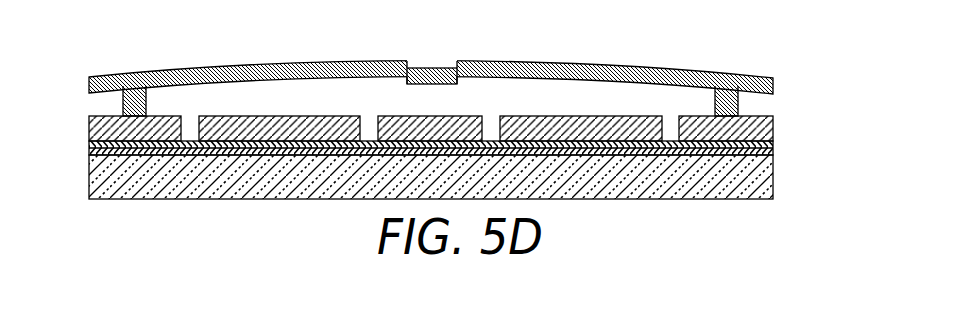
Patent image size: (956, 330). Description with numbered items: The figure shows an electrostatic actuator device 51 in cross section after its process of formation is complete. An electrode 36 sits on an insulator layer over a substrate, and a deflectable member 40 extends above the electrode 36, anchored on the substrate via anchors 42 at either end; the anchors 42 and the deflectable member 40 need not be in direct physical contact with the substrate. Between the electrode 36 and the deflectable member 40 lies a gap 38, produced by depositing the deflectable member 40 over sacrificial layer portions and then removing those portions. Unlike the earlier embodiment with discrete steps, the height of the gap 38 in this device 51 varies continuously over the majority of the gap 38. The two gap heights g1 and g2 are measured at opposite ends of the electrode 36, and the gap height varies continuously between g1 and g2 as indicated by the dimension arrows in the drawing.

The electrode 36 is at (275, 122).
The gap 38 is at (594, 110).
The deflectable member 40 is at (573, 74).
The anchors 42 is at (123, 108).
The device 51 is at (705, 55).
The gap height at one end of electrode g1 is at (208, 87).
The gap height at opposite end of electrode g2 is at (361, 79).